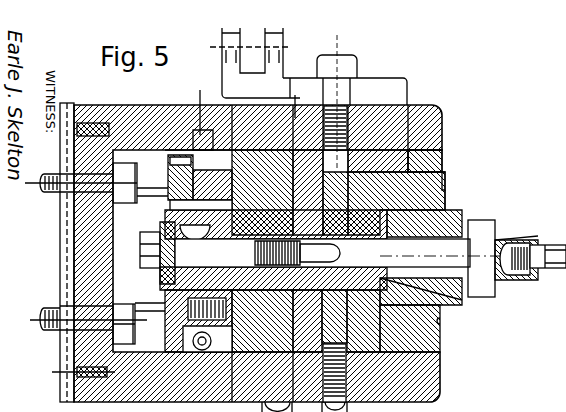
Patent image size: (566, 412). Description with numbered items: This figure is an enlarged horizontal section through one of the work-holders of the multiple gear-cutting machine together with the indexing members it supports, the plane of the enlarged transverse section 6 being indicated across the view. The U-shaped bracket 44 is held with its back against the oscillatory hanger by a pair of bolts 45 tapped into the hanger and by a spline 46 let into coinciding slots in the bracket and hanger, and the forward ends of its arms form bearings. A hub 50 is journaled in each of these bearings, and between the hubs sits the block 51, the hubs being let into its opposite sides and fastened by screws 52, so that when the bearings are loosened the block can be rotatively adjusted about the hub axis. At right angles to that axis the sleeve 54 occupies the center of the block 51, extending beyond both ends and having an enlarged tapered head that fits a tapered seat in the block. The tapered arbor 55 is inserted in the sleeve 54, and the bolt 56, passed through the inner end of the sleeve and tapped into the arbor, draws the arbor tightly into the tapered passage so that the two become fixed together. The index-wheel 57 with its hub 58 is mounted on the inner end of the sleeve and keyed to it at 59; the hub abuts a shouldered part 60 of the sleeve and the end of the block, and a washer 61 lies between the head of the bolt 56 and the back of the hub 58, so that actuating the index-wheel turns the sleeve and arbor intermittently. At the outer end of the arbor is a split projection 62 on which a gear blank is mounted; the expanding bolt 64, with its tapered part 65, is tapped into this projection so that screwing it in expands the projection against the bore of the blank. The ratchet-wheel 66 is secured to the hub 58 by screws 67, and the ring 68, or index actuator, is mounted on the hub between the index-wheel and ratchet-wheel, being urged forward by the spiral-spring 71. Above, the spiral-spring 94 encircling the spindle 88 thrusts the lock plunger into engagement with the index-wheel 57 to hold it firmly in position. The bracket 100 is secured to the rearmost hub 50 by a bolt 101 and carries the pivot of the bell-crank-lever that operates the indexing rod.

The bracket 6 is at (233, 117).
The U-shaped bracket 44 is at (110, 249).
The bolts 45 is at (52, 192).
The spline 46 is at (66, 278).
The hub 50 is at (445, 130).
The block 51 is at (420, 333).
The screws 52 is at (427, 174).
The sleeve 54 is at (450, 293).
The arbor 55 is at (422, 248).
The bolt 56 is at (162, 268).
The index-wheel 57 is at (172, 168).
The hub 58 is at (180, 258).
The key 59 is at (172, 222).
The shouldered part 60 is at (228, 212).
The washer 61 is at (158, 234).
The split projection 62 is at (517, 238).
The expanding bolt 64 is at (530, 263).
The tapered part 65 is at (232, 362).
The ratchet-wheel 66 is at (213, 360).
The screws 67 is at (185, 192).
The ring 68 is at (200, 108).
The spiral-spring 71 is at (182, 360).
The spindle 88 is at (565, 163).
The spiral-spring 94 is at (565, 132).
The bracket 100 is at (287, 81).
The bolt 101 is at (357, 108).